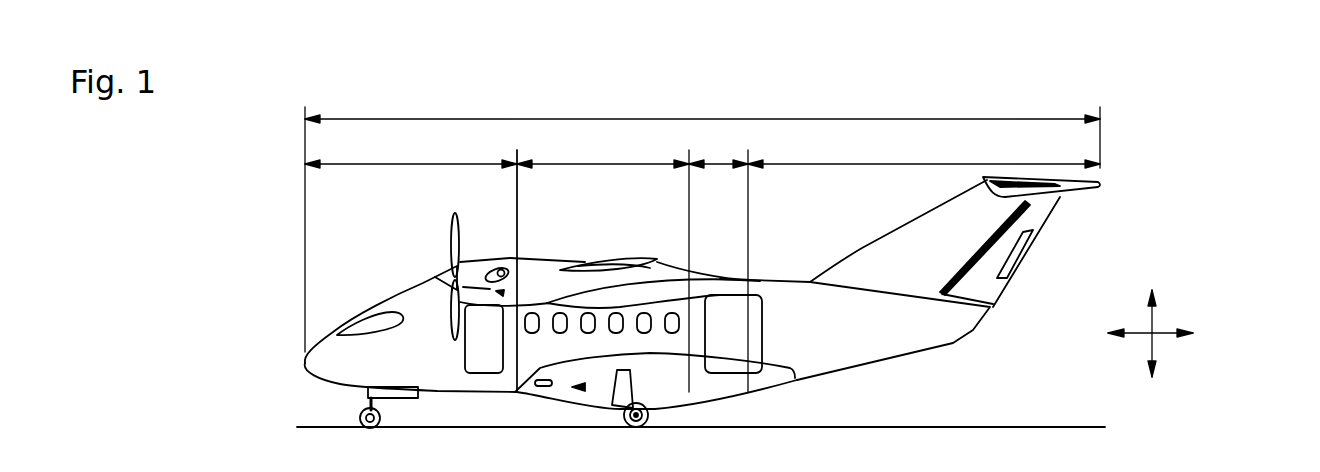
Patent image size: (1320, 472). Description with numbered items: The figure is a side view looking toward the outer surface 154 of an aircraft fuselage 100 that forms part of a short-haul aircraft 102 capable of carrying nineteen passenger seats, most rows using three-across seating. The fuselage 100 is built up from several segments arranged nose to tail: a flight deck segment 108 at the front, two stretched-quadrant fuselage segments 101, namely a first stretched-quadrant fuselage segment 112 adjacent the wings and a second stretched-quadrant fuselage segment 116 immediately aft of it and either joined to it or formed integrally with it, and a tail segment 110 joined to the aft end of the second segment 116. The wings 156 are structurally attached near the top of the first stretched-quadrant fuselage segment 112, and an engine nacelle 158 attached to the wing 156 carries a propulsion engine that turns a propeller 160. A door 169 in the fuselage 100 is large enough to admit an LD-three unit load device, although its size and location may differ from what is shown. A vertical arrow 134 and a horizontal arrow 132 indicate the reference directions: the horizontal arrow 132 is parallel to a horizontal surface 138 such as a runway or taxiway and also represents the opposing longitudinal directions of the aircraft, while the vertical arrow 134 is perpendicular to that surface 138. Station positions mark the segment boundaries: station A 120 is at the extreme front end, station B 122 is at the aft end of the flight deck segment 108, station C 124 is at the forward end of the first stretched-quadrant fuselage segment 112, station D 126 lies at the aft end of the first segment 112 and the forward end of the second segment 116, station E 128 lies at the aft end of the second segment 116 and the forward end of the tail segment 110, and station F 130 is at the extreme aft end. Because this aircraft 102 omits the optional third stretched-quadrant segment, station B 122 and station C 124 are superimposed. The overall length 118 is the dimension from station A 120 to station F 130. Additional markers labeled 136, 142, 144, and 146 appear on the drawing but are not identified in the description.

The aircraft fuselage 100 is at (828, 82).
The stretched-quadrant fuselage segments 101 is at (671, 258).
The short-haul aircraft 102 is at (1001, 91).
The flight deck segment 108 is at (372, 163).
The tail segment 110 is at (863, 163).
The first stretched-quadrant fuselage segment 112 is at (565, 163).
The second stretched-quadrant fuselage segment 116 is at (712, 216).
The overall length 118 is at (418, 118).
The station A 120 is at (305, 143).
The station B 122 is at (516, 212).
The station C 124 is at (546, 197).
The station D 126 is at (688, 214).
The station E 128 is at (749, 212).
The station F 130 is at (1101, 143).
The horizontal arrow 132 is at (1140, 334).
The vertical arrow 134 is at (1152, 320).
The nose section 136 is at (398, 166).
The horizontal surface 138 is at (900, 426).
The cabin section 142 is at (633, 166).
The aft cabin section 144 is at (727, 271).
The tail section 146 is at (898, 166).
The outer surface 154 is at (780, 280).
The wings 156 is at (600, 262).
The engine nacelle 158 is at (510, 256).
The propeller 160 is at (452, 250).
The door 169 is at (800, 326).